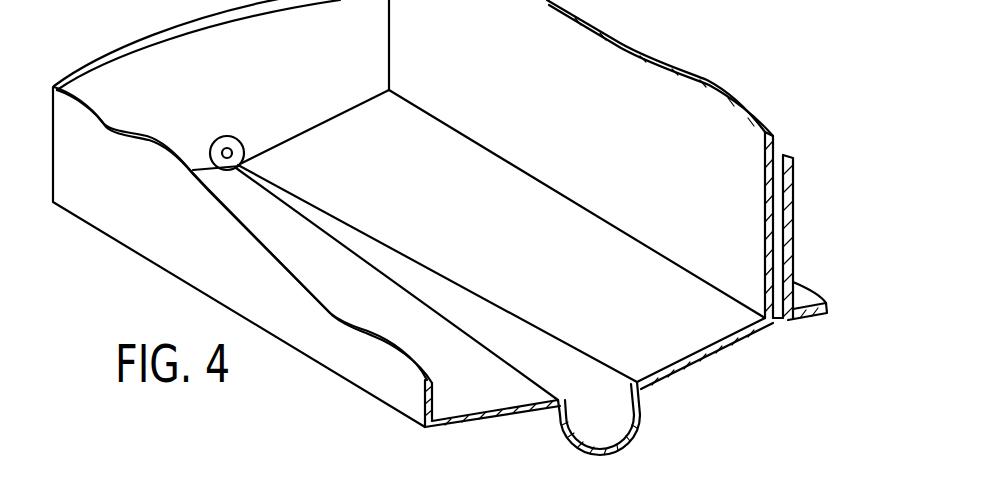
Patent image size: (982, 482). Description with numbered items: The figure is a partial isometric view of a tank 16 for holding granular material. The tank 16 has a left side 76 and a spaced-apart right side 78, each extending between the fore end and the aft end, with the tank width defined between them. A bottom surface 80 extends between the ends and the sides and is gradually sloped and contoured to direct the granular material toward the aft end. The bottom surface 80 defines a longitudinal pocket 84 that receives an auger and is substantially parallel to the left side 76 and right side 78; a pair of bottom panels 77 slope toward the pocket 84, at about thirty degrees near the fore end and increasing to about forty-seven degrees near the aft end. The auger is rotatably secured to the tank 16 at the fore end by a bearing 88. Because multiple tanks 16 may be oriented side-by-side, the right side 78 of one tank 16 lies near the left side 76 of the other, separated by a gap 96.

The tank 16 is at (130, 250).
The left side 76 is at (122, 180).
The bottom panels 77 is at (471, 427).
The right side 78 is at (773, 324).
The bottom surface 80 is at (414, 183).
The longitudinal pocket 84 is at (610, 403).
The bearing 88 is at (242, 146).
The gap 96 is at (788, 323).